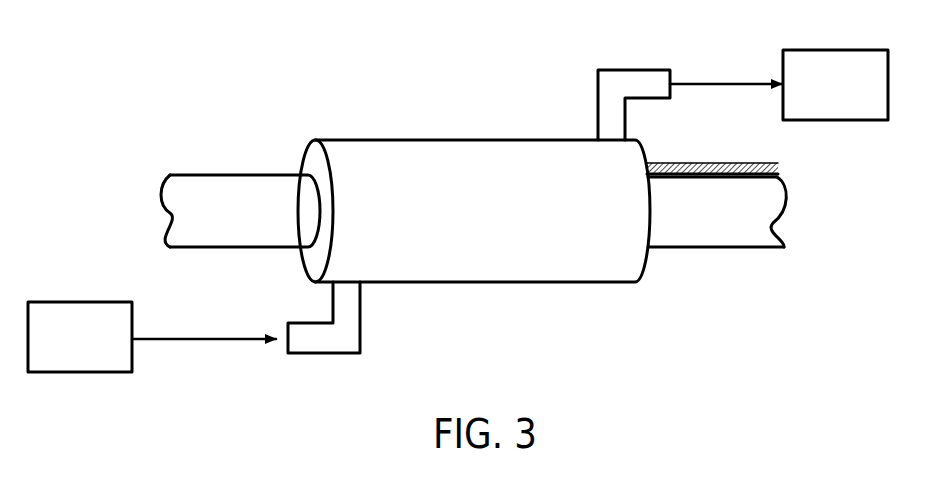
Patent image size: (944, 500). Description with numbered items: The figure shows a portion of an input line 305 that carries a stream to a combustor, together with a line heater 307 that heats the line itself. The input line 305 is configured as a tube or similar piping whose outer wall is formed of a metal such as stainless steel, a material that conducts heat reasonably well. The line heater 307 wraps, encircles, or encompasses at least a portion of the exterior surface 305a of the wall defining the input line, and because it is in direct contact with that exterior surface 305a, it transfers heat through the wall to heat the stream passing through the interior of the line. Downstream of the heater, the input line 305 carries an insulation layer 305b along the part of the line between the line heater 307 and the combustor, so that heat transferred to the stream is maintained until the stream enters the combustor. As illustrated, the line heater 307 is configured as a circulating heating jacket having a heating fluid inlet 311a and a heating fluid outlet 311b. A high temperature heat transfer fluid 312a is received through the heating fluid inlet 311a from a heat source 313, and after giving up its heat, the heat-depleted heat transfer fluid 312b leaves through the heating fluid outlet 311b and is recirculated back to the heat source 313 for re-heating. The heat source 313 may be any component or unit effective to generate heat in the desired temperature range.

The input line 305 is at (262, 175).
The exterior surface 305a is at (709, 221).
The insulation layer 305b is at (702, 163).
The line heater 307 is at (520, 140).
The heating fluid inlet 311a is at (313, 322).
The heating fluid outlet 311b is at (598, 98).
The high temperature heat transfer fluid 312a is at (204, 327).
The heat-depleted heat transfer fluid 312b is at (726, 72).
The heat source 313 is at (115, 300).